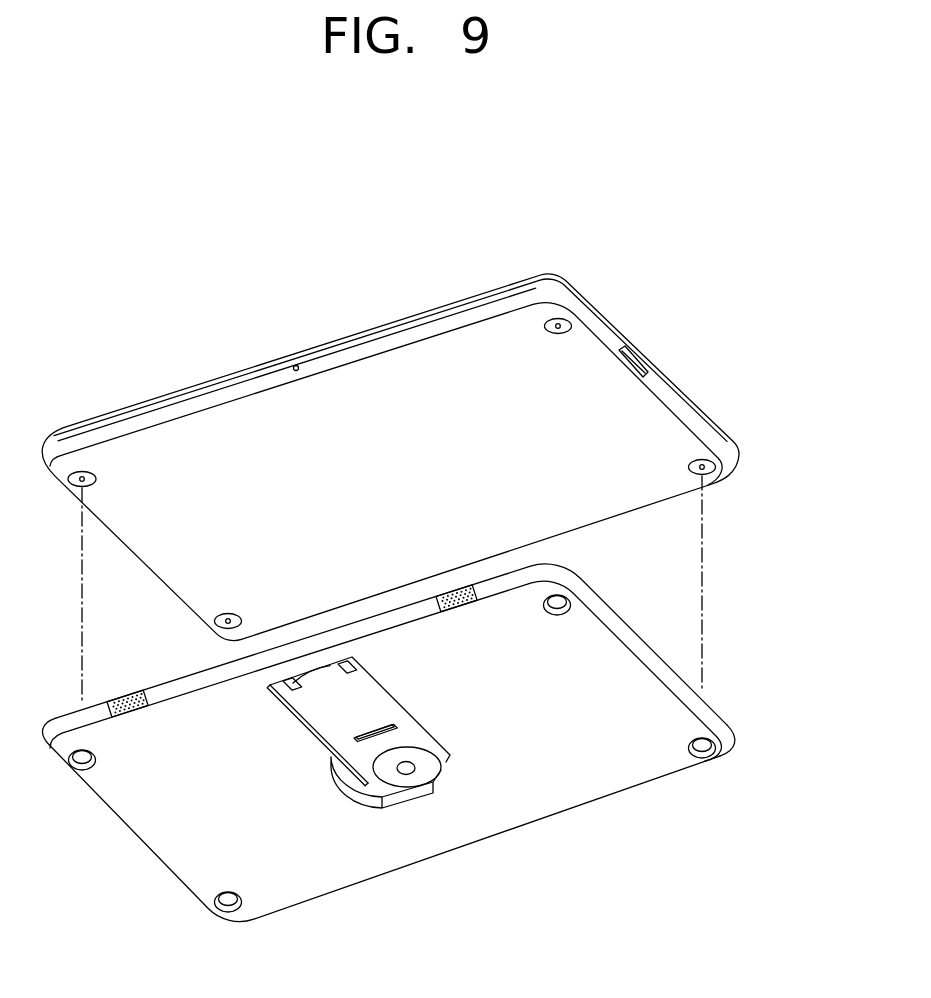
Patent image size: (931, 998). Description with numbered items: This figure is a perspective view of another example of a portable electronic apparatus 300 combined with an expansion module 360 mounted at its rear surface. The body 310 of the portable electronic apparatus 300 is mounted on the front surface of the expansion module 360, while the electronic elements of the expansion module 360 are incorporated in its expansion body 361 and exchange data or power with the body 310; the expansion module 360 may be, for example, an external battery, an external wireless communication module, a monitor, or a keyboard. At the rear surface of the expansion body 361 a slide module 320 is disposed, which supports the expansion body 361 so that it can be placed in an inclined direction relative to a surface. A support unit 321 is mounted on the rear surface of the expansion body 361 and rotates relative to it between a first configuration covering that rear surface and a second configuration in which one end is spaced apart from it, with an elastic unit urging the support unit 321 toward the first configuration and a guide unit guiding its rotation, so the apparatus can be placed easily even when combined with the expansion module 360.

The portable electronic apparatus 300 is at (571, 216).
The body 310 is at (608, 308).
The slide module 320 is at (358, 809).
The support unit 321 is at (418, 737).
The expansion module 360 is at (727, 691).
The expansion body 361 is at (737, 745).